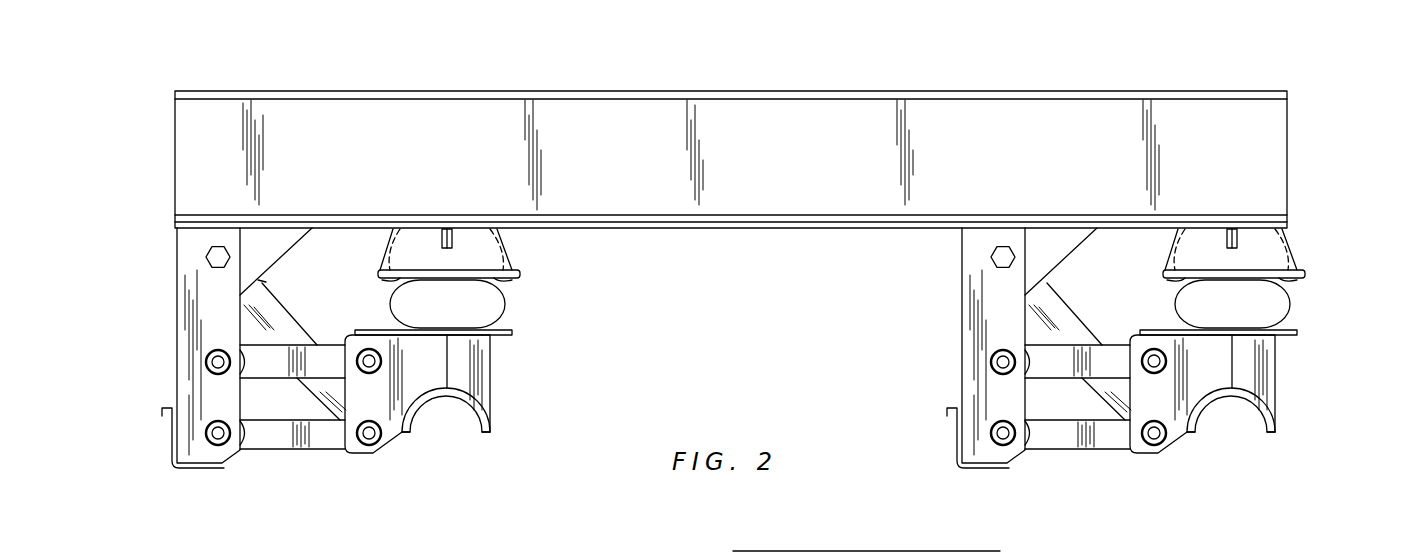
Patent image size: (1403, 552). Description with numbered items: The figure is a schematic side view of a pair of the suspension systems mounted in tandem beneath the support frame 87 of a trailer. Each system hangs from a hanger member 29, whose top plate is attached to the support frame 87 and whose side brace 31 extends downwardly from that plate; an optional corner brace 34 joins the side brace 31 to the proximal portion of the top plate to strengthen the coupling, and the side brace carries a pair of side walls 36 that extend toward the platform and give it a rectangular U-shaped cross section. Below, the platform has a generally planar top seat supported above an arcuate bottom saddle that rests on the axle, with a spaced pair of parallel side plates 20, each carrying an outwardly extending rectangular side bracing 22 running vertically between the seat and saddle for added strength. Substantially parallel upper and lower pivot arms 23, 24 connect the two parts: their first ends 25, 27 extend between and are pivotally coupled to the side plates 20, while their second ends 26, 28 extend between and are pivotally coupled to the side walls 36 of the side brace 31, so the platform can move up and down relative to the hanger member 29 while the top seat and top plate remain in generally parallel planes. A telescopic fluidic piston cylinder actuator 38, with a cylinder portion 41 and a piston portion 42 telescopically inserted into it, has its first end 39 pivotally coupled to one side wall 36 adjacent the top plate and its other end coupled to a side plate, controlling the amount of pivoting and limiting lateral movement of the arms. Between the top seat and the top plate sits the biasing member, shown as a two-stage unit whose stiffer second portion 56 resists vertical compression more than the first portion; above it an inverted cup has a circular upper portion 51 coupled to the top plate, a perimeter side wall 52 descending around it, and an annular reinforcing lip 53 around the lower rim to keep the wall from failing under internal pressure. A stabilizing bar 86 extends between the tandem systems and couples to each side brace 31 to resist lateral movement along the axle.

The side plate 20 is at (487, 398).
The side bracing 22 is at (450, 370).
The upper pivot arm 23 is at (257, 362).
The lower pivot arm 24 is at (332, 446).
The first end of upper pivot arm 25 is at (370, 349).
The second end of upper pivot arm 26 is at (208, 364).
The first end of lower pivot arm 27 is at (366, 455).
The second end of lower pivot arm 28 is at (222, 443).
The hanger member 29 is at (944, 330).
The side brace 31 is at (960, 382).
The corner brace 34 is at (268, 262).
The side wall of side brace 36 is at (183, 340).
The telescopic fluidic piston cylinder actuator 38 is at (290, 297).
The first end of actuator 39 is at (215, 272).
The cylinder portion 41 is at (260, 279).
The piston portion 42 is at (330, 398).
The upper portion of cup 51 is at (751, 551).
The perimeter side wall 52 is at (515, 258).
The reinforcing lip 53 is at (517, 277).
The second portion of biasing member 56 is at (385, 279).
The stabilizing bar 86 is at (162, 412).
The support frame 87 is at (567, 91).